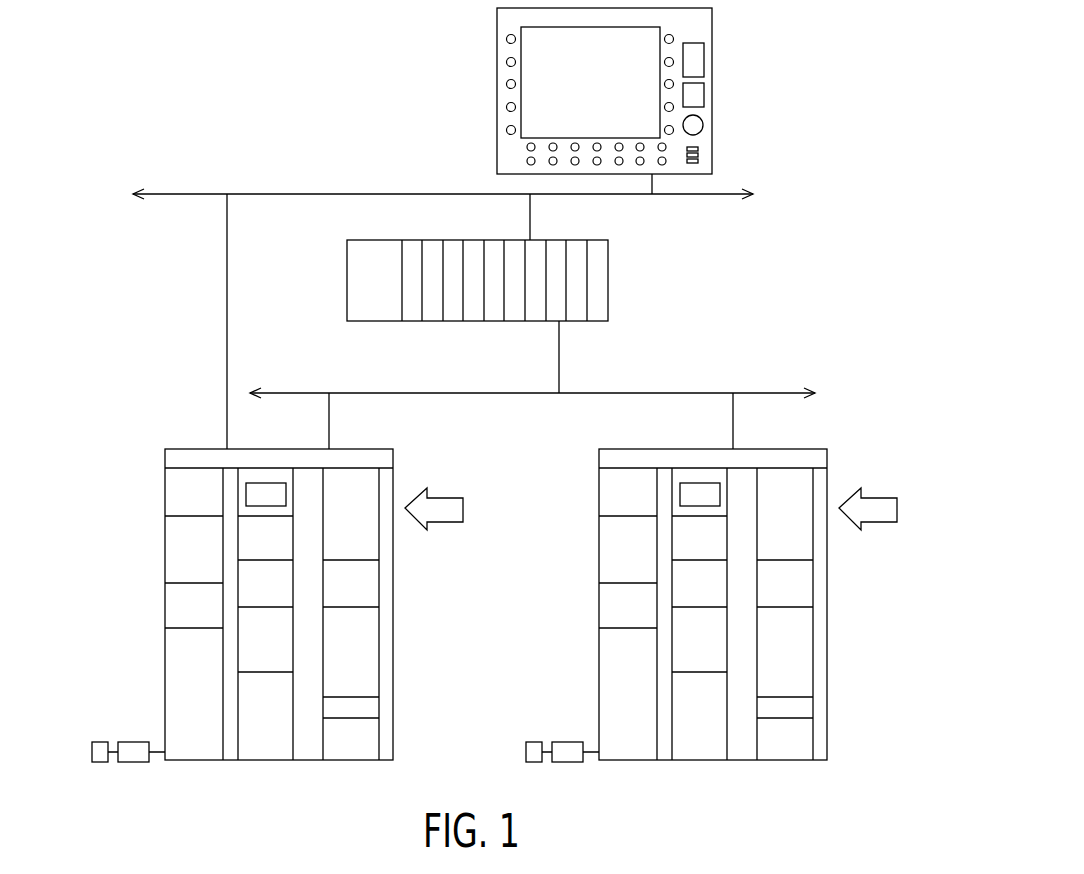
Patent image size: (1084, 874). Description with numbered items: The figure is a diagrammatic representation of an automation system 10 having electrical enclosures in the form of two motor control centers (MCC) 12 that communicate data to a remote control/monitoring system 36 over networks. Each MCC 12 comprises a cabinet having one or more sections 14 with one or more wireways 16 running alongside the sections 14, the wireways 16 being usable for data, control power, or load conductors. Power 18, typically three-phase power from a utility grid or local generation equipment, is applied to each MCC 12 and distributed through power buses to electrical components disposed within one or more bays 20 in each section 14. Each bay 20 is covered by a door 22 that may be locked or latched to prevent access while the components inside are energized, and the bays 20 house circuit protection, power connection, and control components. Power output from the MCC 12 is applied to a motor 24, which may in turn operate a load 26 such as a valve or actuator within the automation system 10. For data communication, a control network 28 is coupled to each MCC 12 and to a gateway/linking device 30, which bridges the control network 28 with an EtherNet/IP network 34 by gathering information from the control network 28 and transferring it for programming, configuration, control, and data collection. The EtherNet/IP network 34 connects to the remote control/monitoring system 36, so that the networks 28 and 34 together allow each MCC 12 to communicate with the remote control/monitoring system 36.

The automation system 10 is at (785, 105).
The motor control center (MCC) 12 is at (165, 552).
The section 14 is at (353, 752).
The wireway 16 is at (393, 726).
The power 18 is at (444, 498).
The bay 20 is at (278, 543).
The door 22 is at (207, 559).
The motor 24 is at (134, 762).
The load 26 is at (100, 742).
The control network 28 is at (642, 393).
The gateway/linking device 30 is at (608, 278).
The EtherNet/IP network 34 is at (292, 194).
The remote control/monitoring system 36 is at (497, 88).